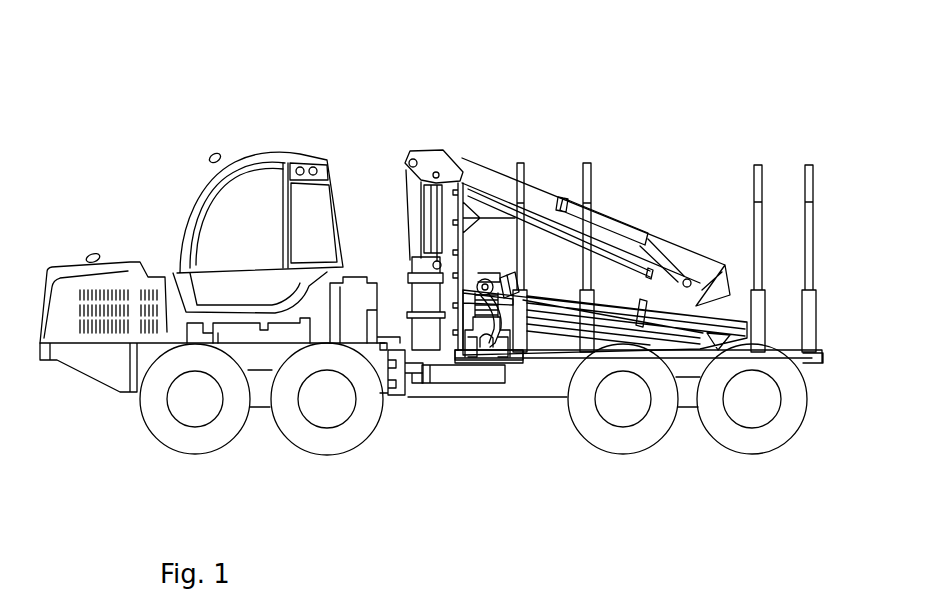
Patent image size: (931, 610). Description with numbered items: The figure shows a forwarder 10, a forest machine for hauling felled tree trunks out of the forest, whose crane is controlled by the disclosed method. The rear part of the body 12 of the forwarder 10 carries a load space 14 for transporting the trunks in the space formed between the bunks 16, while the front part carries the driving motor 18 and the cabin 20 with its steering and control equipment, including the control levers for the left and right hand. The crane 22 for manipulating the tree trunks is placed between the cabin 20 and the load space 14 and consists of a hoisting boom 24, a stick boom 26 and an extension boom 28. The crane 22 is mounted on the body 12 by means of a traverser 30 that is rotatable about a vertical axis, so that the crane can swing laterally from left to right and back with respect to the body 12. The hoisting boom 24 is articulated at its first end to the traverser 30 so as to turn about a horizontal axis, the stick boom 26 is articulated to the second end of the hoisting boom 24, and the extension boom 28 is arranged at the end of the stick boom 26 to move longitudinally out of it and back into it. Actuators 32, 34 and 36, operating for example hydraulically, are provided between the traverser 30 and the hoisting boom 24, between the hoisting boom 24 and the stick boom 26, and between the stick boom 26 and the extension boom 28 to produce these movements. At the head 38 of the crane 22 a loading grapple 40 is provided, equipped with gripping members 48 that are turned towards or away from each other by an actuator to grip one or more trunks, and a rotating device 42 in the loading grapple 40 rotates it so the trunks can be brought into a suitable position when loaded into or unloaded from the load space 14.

The forwarder 10 is at (431, 319).
The body 12 is at (524, 390).
The load space 14 is at (722, 196).
The bunks 16 is at (808, 213).
The driving motor 18 is at (80, 268).
The cabin 20 is at (285, 150).
The crane 22 is at (424, 145).
The hoisting boom 24 is at (483, 177).
The stick boom 26 is at (622, 305).
The extension boom 28 is at (518, 282).
The traverser 30 is at (412, 297).
The actuator 32 is at (438, 210).
The actuator 34 is at (646, 232).
The actuator 36 is at (568, 292).
The head 38 is at (465, 320).
The loading grapple 40 is at (497, 292).
The rotating device 42 is at (486, 283).
The gripping members 48 is at (492, 320).